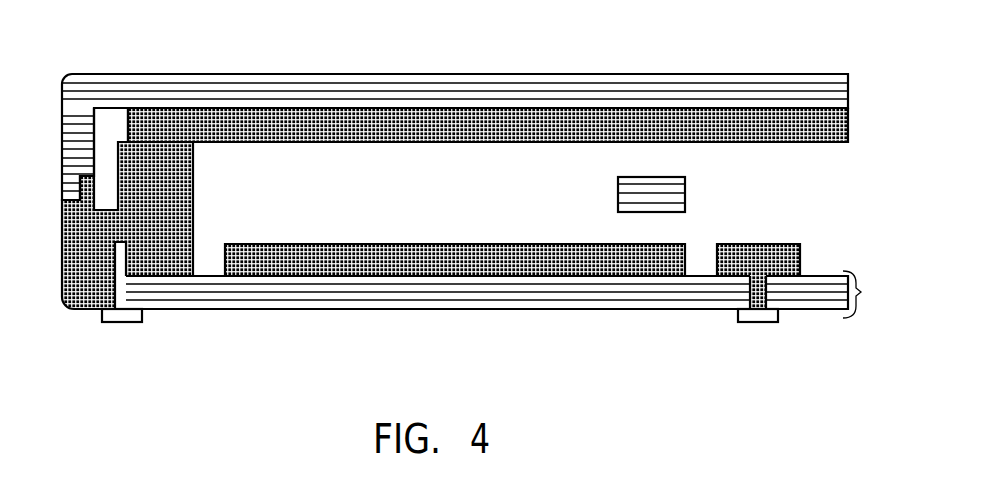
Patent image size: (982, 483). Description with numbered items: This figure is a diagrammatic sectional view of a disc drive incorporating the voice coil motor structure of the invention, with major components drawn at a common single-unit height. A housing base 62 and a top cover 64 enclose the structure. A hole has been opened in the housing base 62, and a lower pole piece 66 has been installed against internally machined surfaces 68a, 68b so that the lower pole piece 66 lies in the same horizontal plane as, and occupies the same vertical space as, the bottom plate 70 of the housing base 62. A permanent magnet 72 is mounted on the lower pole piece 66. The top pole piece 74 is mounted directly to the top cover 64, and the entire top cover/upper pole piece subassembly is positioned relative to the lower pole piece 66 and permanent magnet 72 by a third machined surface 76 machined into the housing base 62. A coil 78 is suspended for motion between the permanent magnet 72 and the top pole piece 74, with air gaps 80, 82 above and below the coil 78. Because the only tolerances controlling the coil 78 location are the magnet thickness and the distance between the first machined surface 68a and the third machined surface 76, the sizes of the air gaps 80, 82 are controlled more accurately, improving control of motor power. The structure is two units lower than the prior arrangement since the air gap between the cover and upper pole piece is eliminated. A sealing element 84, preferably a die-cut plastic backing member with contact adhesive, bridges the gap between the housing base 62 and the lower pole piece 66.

The housing base 62 is at (92, 282).
The top cover 64 is at (145, 78).
The lower pole piece 66 is at (442, 295).
The first machined surface 68a is at (195, 309).
The second machined surface 68b is at (712, 310).
The bottom plate 70 is at (866, 294).
The permanent magnet 72 is at (588, 263).
The top pole piece 74 is at (297, 126).
The third machined surface 76 is at (108, 126).
The coil 78 is at (640, 177).
The air gap 80 is at (597, 131).
The air gap 82 is at (674, 228).
The sealing element 84 is at (117, 330).